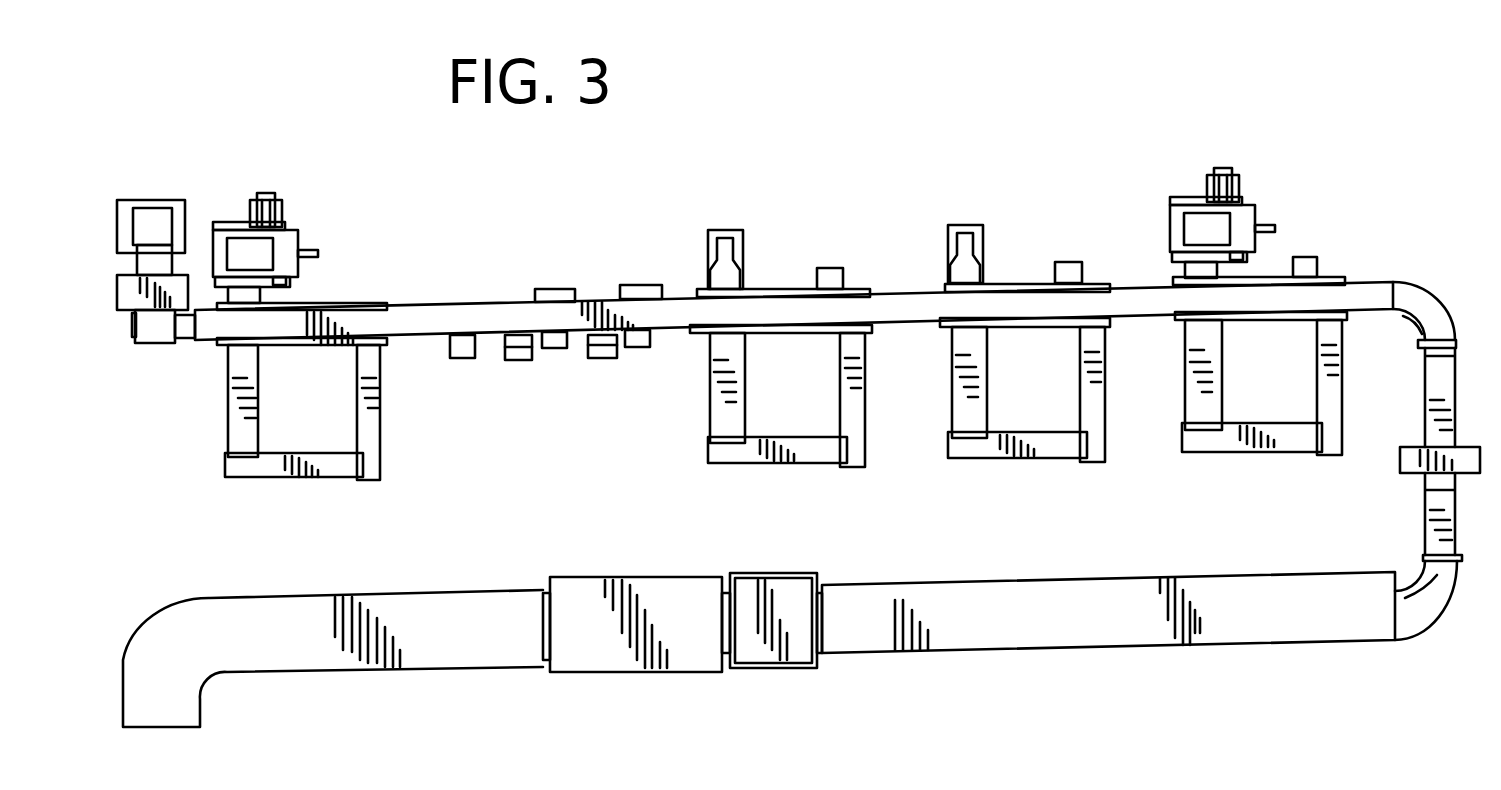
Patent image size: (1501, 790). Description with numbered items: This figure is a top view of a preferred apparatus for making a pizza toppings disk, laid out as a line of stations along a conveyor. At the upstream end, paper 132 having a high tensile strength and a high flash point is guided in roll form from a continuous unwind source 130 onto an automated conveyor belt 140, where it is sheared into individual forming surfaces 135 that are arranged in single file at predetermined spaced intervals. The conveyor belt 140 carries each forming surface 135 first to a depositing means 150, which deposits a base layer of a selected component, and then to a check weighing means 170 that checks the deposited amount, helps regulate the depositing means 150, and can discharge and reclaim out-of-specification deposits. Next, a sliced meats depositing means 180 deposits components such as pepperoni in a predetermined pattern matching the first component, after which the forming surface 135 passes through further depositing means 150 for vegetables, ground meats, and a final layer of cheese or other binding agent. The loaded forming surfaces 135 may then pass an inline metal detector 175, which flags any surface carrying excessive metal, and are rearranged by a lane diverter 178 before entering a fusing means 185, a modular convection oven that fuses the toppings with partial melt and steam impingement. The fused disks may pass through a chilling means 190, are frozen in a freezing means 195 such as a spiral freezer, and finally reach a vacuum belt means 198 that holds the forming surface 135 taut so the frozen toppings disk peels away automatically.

The continuous unwind source 130 is at (116, 228).
The paper 132 is at (117, 268).
The forming surfaces 135 is at (150, 333).
The conveyor belt 140 is at (182, 338).
The depositing means 150 is at (384, 380).
The check weighing means 170 is at (463, 302).
The inline metal detector 175 is at (1462, 447).
The lane diverter 178 is at (1463, 522).
The sliced meats depositing means 180 is at (552, 288).
The fusing means 185 is at (958, 655).
The chilling means 190 is at (790, 672).
The freezing means 195 is at (625, 673).
The vacuum belt means 198 is at (425, 673).